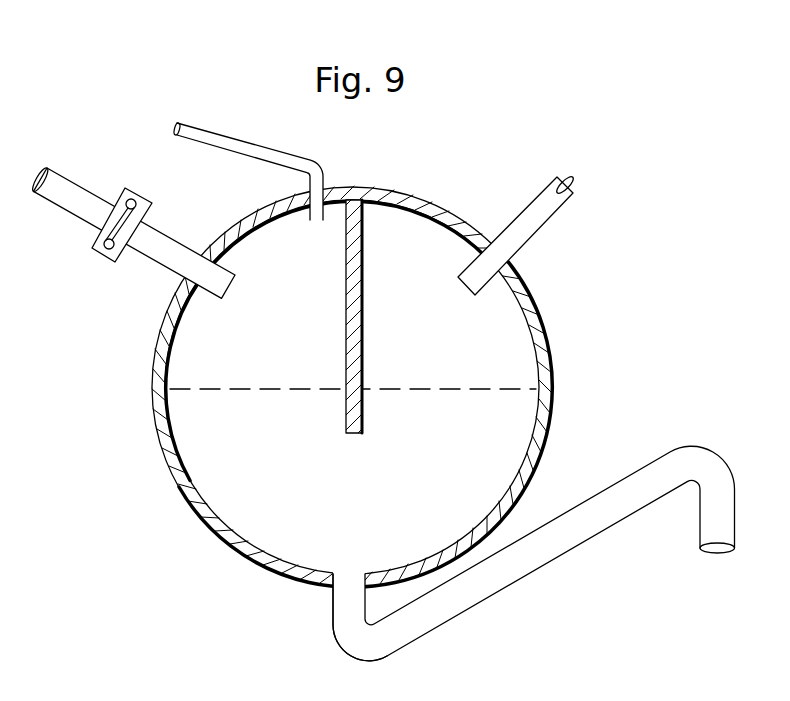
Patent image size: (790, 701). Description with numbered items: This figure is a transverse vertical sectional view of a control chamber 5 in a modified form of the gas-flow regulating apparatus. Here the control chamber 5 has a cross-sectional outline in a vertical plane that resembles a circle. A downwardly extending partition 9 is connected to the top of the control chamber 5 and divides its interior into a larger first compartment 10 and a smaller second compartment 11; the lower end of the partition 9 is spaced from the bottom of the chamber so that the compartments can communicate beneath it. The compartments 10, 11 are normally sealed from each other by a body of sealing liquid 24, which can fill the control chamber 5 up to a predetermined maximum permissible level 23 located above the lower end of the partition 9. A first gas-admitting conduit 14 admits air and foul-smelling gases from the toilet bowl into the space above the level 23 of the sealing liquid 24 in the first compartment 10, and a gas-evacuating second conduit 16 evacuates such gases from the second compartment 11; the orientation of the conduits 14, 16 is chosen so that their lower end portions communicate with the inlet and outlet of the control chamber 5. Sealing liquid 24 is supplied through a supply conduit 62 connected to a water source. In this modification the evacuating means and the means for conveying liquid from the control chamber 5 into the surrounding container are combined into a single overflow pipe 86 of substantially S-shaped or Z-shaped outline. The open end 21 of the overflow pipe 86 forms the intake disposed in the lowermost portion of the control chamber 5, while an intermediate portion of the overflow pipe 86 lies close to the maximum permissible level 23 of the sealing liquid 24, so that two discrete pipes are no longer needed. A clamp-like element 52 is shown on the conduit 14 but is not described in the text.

The control chamber 5 is at (184, 525).
The partition 9 is at (350, 356).
The first compartment 10 is at (270, 314).
The second compartment 11 is at (397, 314).
The first gas-admitting conduit 14 is at (167, 258).
The gas-evacuating second conduit 16 is at (525, 228).
The open end 21 is at (352, 576).
The maximum permissible level 23 is at (452, 389).
The sealing liquid 24 is at (314, 492).
The clamp 52 is at (110, 241).
The supply conduit 62 is at (243, 147).
The overflow pipe 86 is at (596, 510).